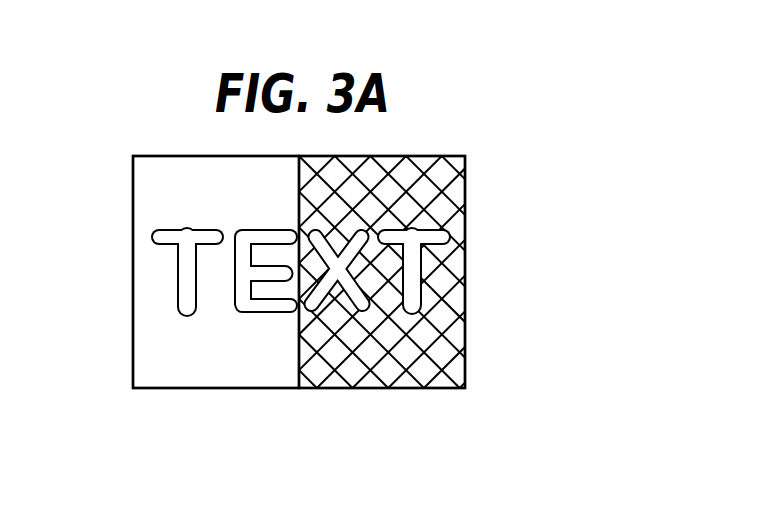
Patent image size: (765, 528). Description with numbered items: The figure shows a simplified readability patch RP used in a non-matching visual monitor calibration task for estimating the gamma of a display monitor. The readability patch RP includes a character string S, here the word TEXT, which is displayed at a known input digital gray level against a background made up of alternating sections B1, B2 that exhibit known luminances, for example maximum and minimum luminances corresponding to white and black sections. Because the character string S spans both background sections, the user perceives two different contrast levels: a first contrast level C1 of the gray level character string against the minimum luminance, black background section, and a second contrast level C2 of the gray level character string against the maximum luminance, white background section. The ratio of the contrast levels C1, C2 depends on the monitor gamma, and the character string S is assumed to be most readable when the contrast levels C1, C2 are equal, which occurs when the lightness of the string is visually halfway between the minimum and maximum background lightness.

The first contrast level C1 is at (447, 286).
The second contrast level C2 is at (170, 186).
The character string S is at (243, 317).
The background section B1 is at (203, 388).
The background section B2 is at (372, 388).
The readability patch RP is at (528, 268).